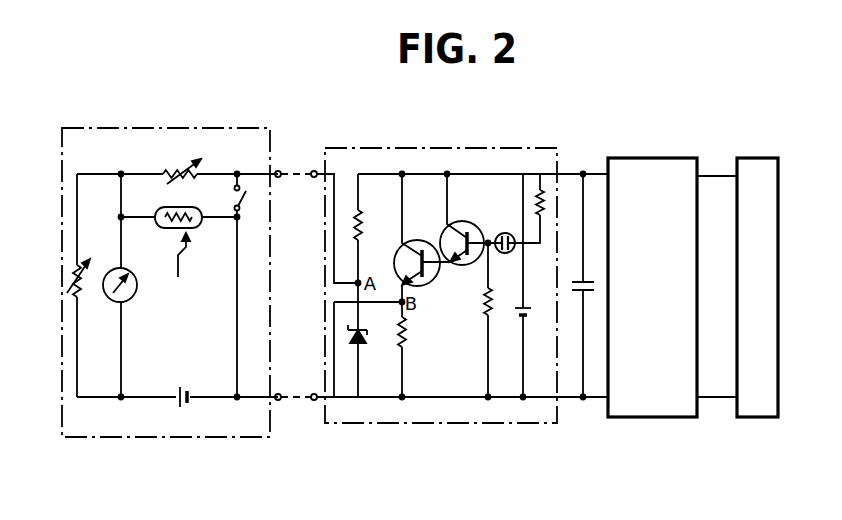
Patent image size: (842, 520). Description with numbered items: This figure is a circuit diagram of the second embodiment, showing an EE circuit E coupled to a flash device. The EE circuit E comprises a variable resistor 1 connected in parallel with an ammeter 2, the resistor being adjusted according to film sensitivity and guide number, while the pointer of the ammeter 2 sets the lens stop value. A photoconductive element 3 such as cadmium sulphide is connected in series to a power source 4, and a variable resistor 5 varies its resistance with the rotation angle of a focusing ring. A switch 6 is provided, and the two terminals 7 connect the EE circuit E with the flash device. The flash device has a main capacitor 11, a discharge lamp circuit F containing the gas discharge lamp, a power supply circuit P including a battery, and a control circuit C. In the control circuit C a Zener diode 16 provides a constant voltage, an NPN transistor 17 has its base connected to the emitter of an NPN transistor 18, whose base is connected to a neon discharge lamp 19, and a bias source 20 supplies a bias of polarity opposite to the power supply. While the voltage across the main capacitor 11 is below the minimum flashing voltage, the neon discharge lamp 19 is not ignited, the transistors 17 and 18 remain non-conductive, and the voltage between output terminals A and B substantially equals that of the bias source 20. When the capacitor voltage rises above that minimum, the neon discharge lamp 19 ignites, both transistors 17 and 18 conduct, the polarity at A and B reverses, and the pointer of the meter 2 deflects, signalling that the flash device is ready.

The variable resistor 1 is at (86, 290).
The ammeter 2 is at (137, 291).
The photoconductive element 3 is at (201, 223).
The power source 4 is at (187, 382).
The variable resistor 5 is at (163, 172).
The switch 6 is at (244, 199).
The terminals 7 is at (279, 169).
The main capacitor 11 is at (583, 292).
The Zener diode 16 is at (360, 347).
The NPN transistor 17 is at (418, 240).
The NPN transistor 18 is at (462, 221).
The neon discharge lamp 19 is at (504, 233).
The bias source 20 is at (521, 310).
The EE circuit E is at (157, 128).
The control circuit C is at (437, 148).
The discharge lamp circuit F is at (636, 158).
The power supply circuit P is at (750, 158).